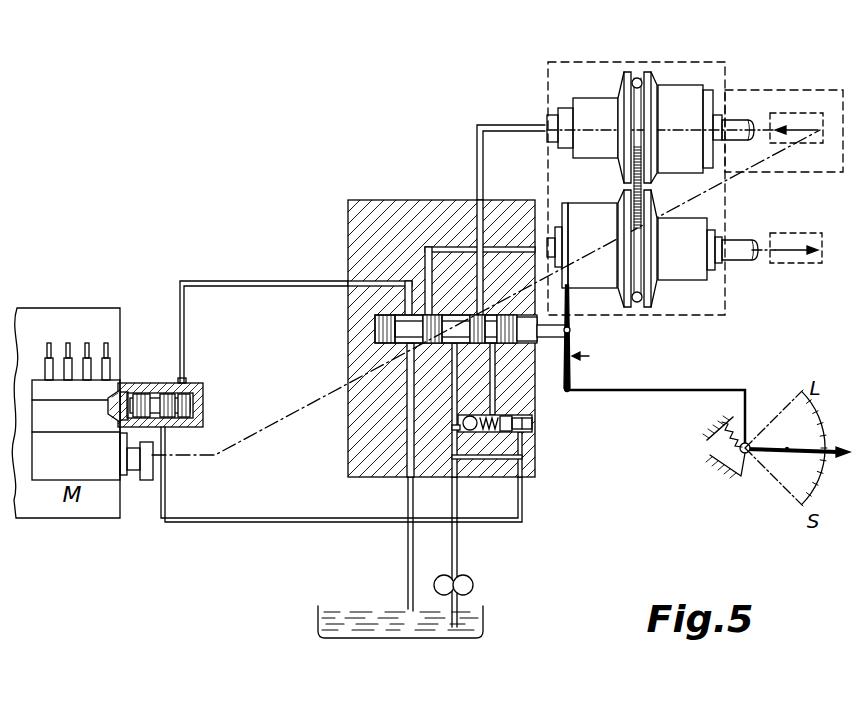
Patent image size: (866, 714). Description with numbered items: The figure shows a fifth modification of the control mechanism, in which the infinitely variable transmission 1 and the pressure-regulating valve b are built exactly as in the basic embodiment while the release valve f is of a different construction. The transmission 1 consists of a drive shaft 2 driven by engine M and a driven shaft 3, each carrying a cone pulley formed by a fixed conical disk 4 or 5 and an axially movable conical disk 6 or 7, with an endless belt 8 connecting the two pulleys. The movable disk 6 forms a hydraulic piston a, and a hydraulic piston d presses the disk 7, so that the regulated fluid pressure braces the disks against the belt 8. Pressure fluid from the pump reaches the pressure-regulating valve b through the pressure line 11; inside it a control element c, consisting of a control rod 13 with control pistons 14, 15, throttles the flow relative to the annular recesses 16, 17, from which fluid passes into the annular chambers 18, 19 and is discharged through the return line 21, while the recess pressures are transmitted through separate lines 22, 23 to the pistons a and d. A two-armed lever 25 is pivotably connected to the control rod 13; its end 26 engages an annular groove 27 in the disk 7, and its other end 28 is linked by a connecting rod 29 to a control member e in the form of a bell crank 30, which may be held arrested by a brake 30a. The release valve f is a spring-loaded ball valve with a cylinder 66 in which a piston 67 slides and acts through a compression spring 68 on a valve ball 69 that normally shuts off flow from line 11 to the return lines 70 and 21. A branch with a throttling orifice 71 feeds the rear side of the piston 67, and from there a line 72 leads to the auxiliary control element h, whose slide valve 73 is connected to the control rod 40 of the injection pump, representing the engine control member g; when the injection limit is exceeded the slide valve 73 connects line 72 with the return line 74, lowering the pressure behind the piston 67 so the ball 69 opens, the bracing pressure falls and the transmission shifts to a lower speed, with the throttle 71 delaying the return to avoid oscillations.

The infinitely variable transmission 1 is at (712, 66).
The drive shaft 2 is at (735, 118).
The driven shaft 3 is at (737, 244).
The conical disk 4 is at (624, 86).
The conical disk 5 is at (655, 306).
The axially movable conical disk 6 is at (647, 86).
The axially movable conical disk 7 is at (634, 302).
The endless belt 8 is at (636, 77).
The pressure line 11 is at (458, 560).
The control rod 13 is at (572, 332).
The control piston 14 is at (403, 312).
The control piston 15 is at (462, 312).
The annular recess 16 is at (430, 312).
The annular recess 17 is at (478, 312).
The annular chamber 18 is at (352, 266).
The annular chamber 19 is at (505, 312).
The return line 21 is at (407, 498).
The pressure line 22 is at (538, 226).
The pressure line 23 is at (477, 135).
The two-armed lever 25 is at (591, 356).
The lever end 26 is at (606, 283).
The annular groove 27 is at (570, 208).
The lever end 28 is at (571, 389).
The connecting rod 29 is at (669, 389).
The bell crank 30 is at (750, 404).
The brake 30a is at (738, 449).
The control rod of the injection pump 40 is at (109, 409).
The cylinder 66 is at (522, 413).
The piston 67 is at (521, 478).
The compression spring 68 is at (447, 474).
The valve ball 69 is at (465, 418).
The return line 70 is at (490, 381).
The throttling orifice 71 is at (489, 474).
The line 72 is at (522, 500).
The auxiliary slide valve 73 is at (163, 398).
The return line 74 is at (221, 281).
The hydraulic piston a is at (686, 88).
The pressure-regulating valve b is at (497, 347).
The control element c is at (544, 339).
The hydraulic piston d is at (624, 282).
The control member e is at (788, 446).
The release valve f is at (455, 432).
The control member of the engine output control device g is at (122, 392).
The auxiliary control element h is at (185, 384).